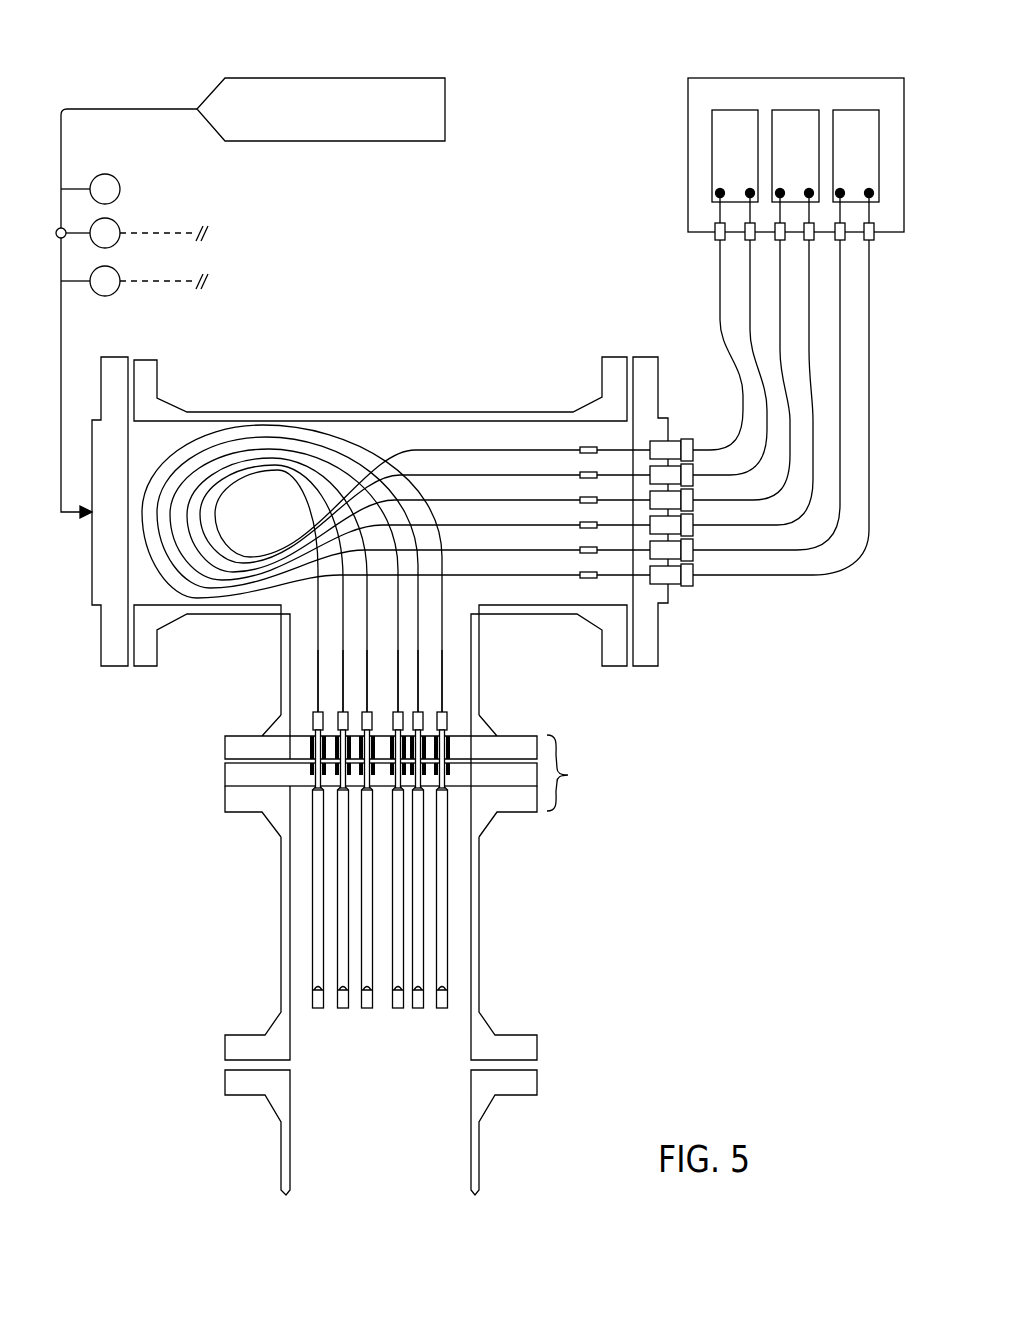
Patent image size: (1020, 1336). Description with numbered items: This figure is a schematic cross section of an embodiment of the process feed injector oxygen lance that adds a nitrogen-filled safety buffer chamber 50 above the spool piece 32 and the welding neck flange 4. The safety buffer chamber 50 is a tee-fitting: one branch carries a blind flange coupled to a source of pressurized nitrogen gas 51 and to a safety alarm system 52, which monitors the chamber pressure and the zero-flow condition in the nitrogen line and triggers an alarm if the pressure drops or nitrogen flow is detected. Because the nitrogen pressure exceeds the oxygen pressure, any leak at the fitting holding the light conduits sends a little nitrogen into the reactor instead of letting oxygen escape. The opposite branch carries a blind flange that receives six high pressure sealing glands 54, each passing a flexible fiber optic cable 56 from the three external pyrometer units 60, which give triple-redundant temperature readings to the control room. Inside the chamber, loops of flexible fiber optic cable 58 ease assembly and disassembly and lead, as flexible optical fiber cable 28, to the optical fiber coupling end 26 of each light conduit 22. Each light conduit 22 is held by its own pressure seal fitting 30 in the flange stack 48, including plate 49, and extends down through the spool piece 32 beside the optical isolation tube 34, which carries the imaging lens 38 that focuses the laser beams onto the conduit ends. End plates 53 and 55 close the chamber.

The welding neck flange 4 is at (538, 1076).
The light conduit 22 is at (450, 740).
The optical fiber coupling end 26 is at (448, 710).
The flexible optical fiber cable 28 is at (443, 665).
The pressure seal fitting 30 is at (313, 740).
The spool piece 32 is at (282, 918).
The optical isolation tube 34 is at (450, 918).
The imaging lens 38 is at (442, 990).
The flange assembly 48 is at (576, 773).
The mounting plate 49 is at (232, 771).
The safety buffer chamber 50 is at (348, 412).
The source of pressurized nitrogen gas 51 is at (322, 78).
The safety alarm system 52 is at (130, 190).
The end plate 53 is at (92, 590).
The high pressure sealing gland 54 is at (675, 586).
The end plate 55 is at (632, 357).
The flexible fiber optic cable 56 is at (797, 577).
The loops of flexible fiber optic cable 58 is at (227, 430).
The external pyrometer unit 60 is at (725, 110).